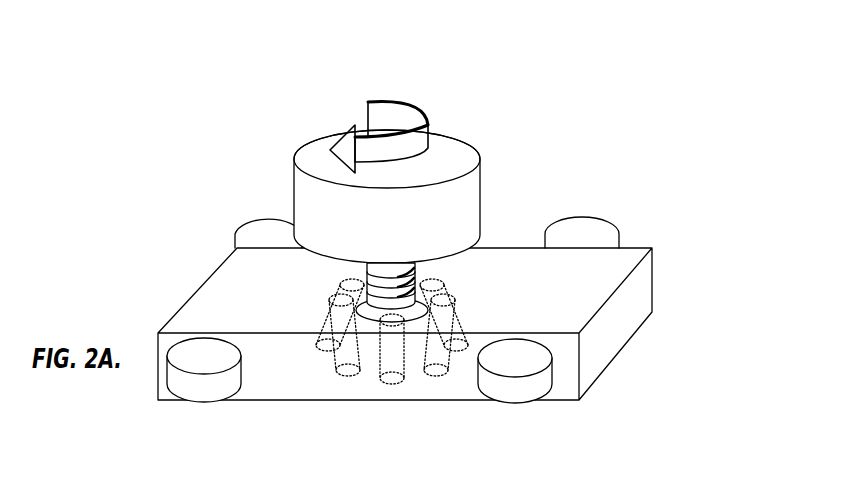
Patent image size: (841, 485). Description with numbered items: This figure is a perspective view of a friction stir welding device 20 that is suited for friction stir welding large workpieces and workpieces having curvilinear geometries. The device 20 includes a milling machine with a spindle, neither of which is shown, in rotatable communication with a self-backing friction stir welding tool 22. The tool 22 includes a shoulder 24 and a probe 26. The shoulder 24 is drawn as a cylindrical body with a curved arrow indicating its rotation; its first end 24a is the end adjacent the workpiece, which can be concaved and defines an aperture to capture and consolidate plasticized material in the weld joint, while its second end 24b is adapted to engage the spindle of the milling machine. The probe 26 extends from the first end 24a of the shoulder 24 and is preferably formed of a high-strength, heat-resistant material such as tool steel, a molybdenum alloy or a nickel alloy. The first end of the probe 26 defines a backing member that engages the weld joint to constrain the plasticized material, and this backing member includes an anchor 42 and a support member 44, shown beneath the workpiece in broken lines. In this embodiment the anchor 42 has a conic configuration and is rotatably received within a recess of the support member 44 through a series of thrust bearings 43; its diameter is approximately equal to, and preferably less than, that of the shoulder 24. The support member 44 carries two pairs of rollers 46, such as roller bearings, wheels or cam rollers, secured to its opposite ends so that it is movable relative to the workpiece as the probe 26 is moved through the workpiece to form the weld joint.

The friction stir welding device 20 is at (208, 152).
The self-backing friction stir welding tool 22 is at (515, 160).
The shoulder 24 is at (318, 143).
The first end of the shoulder 24a is at (357, 245).
The second end of the shoulder 24b is at (438, 155).
The probe 26 is at (420, 272).
The anchor 42 is at (410, 358).
The thrust bearings 43 is at (442, 318).
The support member 44 is at (613, 328).
The rollers 46 is at (253, 230).